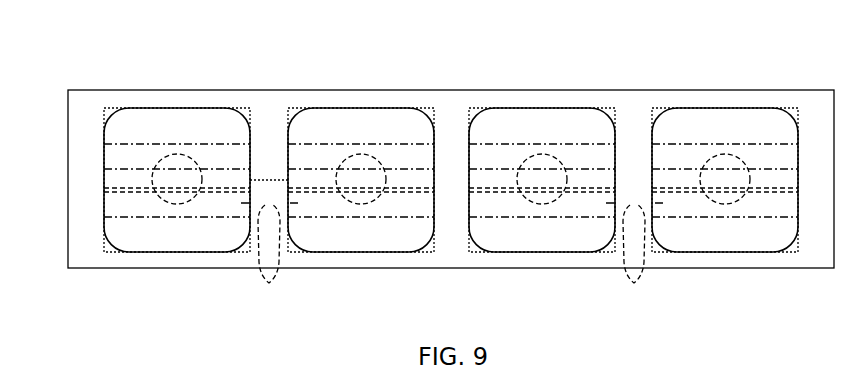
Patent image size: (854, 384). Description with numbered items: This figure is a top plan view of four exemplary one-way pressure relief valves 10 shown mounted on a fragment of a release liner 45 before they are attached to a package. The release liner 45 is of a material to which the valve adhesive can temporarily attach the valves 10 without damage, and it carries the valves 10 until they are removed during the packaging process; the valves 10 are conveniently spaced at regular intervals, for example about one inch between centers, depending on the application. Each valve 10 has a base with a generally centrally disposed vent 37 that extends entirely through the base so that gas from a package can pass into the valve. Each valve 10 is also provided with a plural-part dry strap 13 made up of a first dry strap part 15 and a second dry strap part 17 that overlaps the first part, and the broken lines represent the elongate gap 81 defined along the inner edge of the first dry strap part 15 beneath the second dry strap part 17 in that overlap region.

The one-way pressure relief valve 10 is at (183, 82).
The dry strap 13 is at (447, 246).
The first dry strap part 15 is at (115, 156).
The second dry strap part 17 is at (128, 204).
The vent 37 is at (178, 186).
The release liner 45 is at (83, 98).
The elongate gap 81 is at (128, 188).